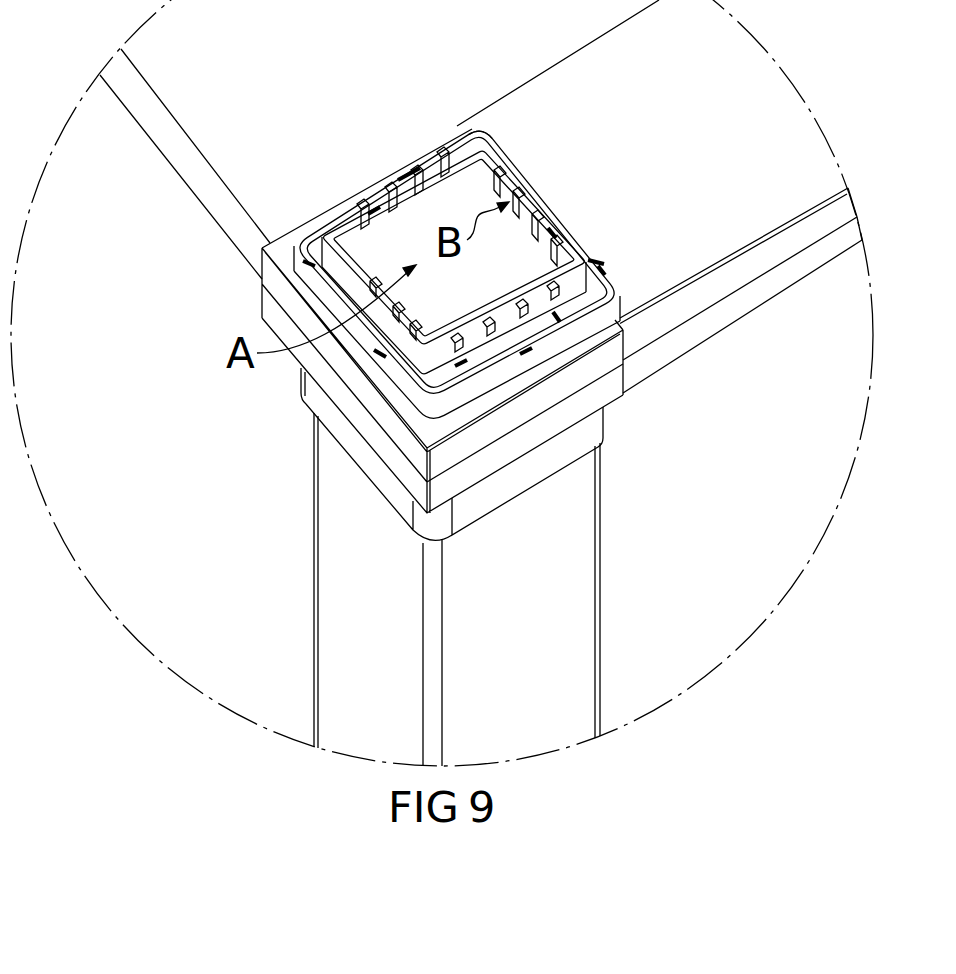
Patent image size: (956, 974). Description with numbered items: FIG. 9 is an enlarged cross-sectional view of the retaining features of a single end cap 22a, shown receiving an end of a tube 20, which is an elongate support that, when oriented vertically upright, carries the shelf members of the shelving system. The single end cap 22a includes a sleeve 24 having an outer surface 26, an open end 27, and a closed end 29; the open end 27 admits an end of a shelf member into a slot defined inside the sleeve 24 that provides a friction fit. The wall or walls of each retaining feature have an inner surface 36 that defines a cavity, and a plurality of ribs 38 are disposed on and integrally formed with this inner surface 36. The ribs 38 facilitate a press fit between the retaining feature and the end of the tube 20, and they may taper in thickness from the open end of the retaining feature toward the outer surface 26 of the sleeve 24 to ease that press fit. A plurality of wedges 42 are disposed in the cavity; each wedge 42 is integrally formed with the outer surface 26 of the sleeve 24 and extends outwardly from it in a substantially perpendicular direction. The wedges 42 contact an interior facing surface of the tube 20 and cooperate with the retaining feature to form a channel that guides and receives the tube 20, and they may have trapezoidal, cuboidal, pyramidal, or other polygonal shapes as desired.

The elongate support 20 is at (472, 360).
The single end cap 22a is at (700, 333).
The sleeve 24 is at (699, 236).
The outer surface 26 is at (731, 238).
The open end 27 is at (462, 119).
The closed end 29 is at (625, 375).
The inner surface 36 is at (360, 210).
The ribs 38 is at (452, 147).
The wedges 42 is at (543, 240).